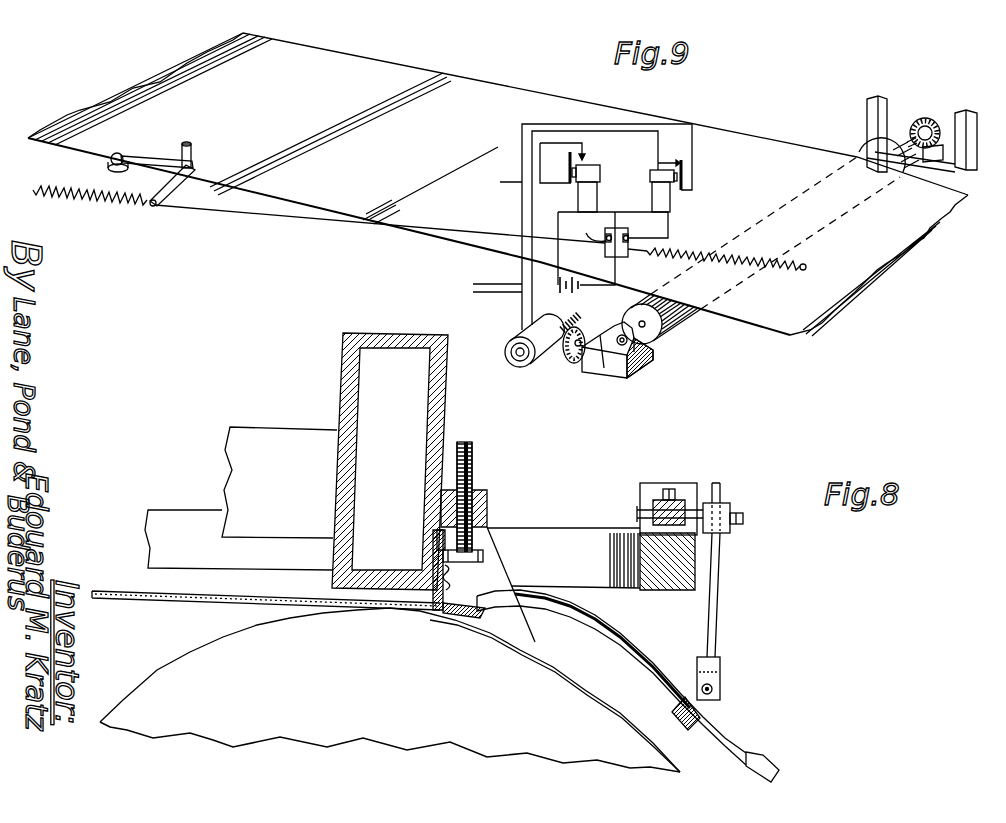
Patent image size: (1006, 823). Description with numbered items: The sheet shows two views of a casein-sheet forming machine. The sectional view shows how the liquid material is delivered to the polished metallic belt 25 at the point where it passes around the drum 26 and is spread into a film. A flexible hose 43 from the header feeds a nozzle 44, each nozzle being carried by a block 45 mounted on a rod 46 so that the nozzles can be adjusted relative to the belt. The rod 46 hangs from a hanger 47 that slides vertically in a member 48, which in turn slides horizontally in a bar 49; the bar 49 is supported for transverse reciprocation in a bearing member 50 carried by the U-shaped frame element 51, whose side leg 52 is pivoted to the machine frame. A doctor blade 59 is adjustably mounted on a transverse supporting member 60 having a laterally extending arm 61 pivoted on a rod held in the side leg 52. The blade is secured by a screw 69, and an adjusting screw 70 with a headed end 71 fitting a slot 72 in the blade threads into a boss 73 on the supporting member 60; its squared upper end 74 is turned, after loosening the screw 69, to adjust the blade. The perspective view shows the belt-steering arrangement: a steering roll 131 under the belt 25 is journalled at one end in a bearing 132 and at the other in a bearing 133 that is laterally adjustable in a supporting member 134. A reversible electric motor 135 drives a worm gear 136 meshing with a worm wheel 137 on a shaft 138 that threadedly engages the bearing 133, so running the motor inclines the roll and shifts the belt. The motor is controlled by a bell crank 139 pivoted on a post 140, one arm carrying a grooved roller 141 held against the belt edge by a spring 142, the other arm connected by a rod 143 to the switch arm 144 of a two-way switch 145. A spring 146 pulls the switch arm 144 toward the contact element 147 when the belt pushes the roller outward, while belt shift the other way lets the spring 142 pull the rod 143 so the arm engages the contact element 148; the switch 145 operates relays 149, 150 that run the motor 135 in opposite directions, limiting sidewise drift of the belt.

In FIG. 9, the metallic belt 25 is at (366, 55).
In FIG. 8, the metallic belt 25 is at (153, 601).
In FIG. 8, the drum 26 is at (390, 690).
In FIG. 8, the flexible hose 43 is at (779, 766).
In FIG. 8, the nozzle 44 is at (652, 658).
In FIG. 8, the block 45 is at (722, 706).
In FIG. 8, the rod 46 is at (716, 688).
In FIG. 8, the hanger 47 is at (719, 616).
In FIG. 8, the member 48 is at (728, 505).
In FIG. 8, the bar 49 is at (676, 500).
In FIG. 8, the bearing member 50 is at (641, 494).
In FIG. 8, the U-shaped frame element 51 is at (673, 588).
In FIG. 8, the side leg 52 is at (580, 540).
In FIG. 8, the doctor blade 59 is at (445, 598).
In FIG. 8, the supporting member 60 is at (444, 393).
In FIG. 8, the laterally extending arm 61 is at (266, 432).
In FIG. 8, the screw 69 is at (441, 558).
In FIG. 8, the screw 70 is at (474, 468).
In FIG. 8, the headed end 71 is at (490, 530).
In FIG. 8, the slot 72 is at (436, 539).
In FIG. 8, the boss 73 is at (488, 497).
In FIG. 8, the squared upper end 74 is at (474, 450).
In FIG. 9, the steering roll 131 is at (693, 330).
In FIG. 9, the bearing 132 is at (928, 117).
In FIG. 9, the bearing 133 is at (660, 342).
In FIG. 9, the supporting member 134 is at (614, 378).
In FIG. 9, the reversible electric motor 135 is at (540, 370).
In FIG. 9, the worm gear 136 is at (578, 315).
In FIG. 9, the worm wheel 137 is at (584, 330).
In FIG. 9, the shaft 138 is at (578, 350).
In FIG. 9, the bell crank 139 is at (178, 190).
In FIG. 9, the post 140 is at (190, 150).
In FIG. 9, the roller 141 is at (104, 164).
In FIG. 9, the spring 142 is at (96, 206).
In FIG. 9, the rod 143 is at (272, 226).
In FIG. 9, the switch arm 144 is at (620, 225).
In FIG. 9, the two-way switch 145 is at (616, 226).
In FIG. 9, the spring 146 is at (690, 250).
In FIG. 9, the contact element 147 is at (637, 230).
In FIG. 9, the contact element 148 is at (613, 252).
In FIG. 9, the relay 149 is at (590, 160).
In FIG. 9, the relay 150 is at (654, 162).